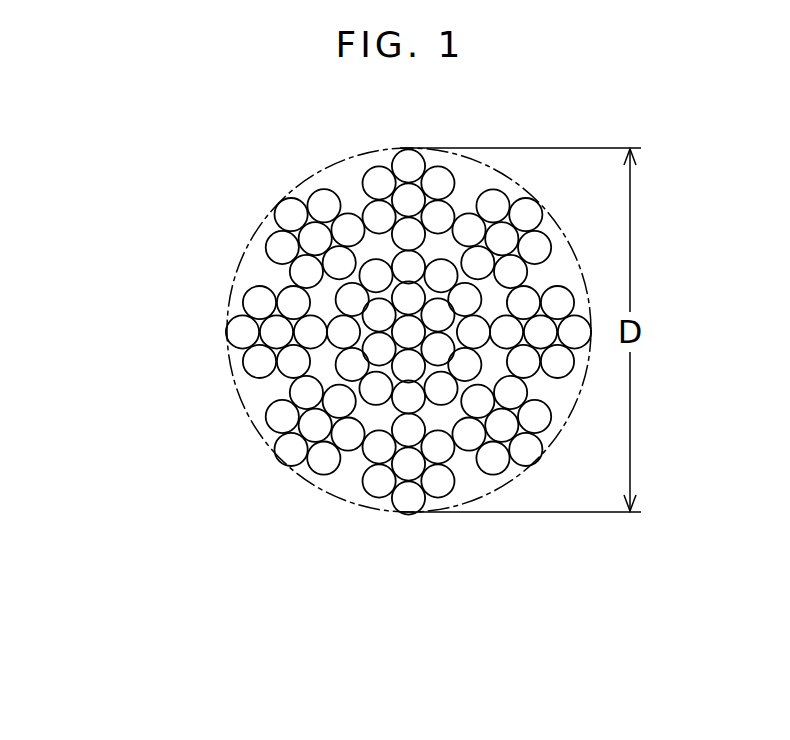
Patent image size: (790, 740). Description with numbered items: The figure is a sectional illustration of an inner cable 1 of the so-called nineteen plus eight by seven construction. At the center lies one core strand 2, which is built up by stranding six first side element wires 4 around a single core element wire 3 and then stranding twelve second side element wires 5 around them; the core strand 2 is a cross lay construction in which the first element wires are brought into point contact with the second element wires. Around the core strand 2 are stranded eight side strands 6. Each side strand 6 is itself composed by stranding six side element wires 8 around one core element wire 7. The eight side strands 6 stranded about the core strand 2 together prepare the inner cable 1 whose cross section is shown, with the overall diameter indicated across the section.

The inner cable 1 is at (133, 348).
The core strand 2 is at (340, 441).
The core element wire 3 is at (407, 332).
The first side element wires 4 is at (408, 366).
The second side element wires 5 is at (408, 397).
The side strand 6 is at (264, 207).
The core element wire 7 is at (315, 239).
The side element wires 8 is at (282, 252).